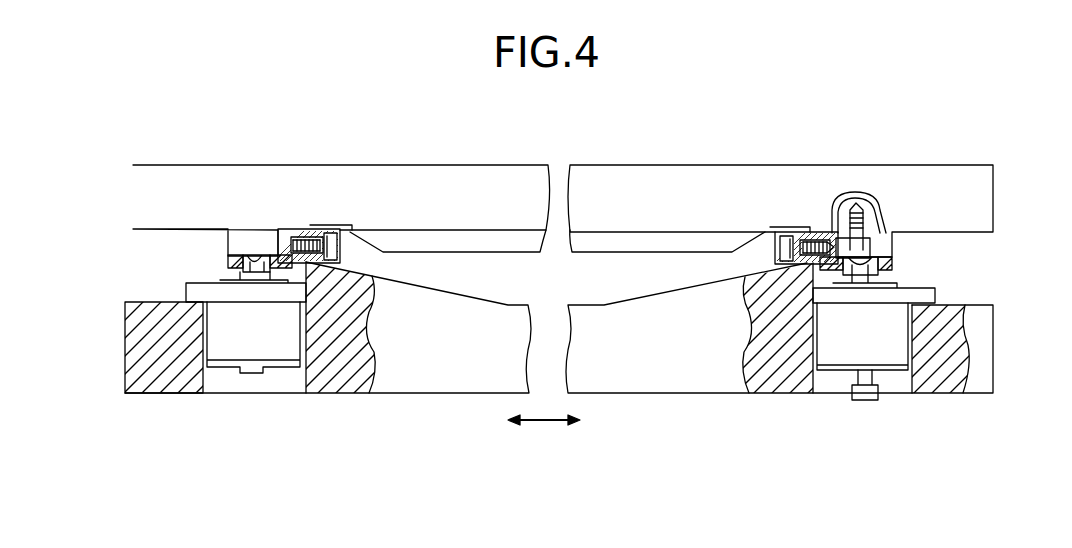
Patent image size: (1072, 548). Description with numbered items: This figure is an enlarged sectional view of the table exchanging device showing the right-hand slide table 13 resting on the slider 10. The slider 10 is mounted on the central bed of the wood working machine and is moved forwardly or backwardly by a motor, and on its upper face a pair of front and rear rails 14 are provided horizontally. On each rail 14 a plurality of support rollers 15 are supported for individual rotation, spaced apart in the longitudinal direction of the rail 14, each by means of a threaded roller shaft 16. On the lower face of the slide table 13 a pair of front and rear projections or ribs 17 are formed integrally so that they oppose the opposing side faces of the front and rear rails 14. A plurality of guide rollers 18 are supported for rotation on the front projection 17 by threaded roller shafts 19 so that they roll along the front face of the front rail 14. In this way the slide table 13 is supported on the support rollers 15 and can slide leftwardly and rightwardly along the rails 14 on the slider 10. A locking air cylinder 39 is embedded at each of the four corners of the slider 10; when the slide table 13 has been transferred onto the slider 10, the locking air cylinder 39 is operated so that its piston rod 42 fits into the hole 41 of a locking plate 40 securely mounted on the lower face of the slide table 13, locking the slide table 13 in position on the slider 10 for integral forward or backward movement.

The slider 10 is at (681, 367).
The right slide table 13 is at (607, 185).
The rail 14 is at (288, 230).
The support roller 15 is at (340, 231).
The threaded roller shaft 16 is at (318, 232).
The projection 17 is at (228, 250).
The guide roller 18 is at (890, 232).
The threaded roller shaft 19 is at (873, 232).
The locking air cylinder 39 is at (277, 347).
The locking plate 40 is at (293, 283).
The hole 41 is at (245, 270).
The piston rod 42 is at (242, 277).